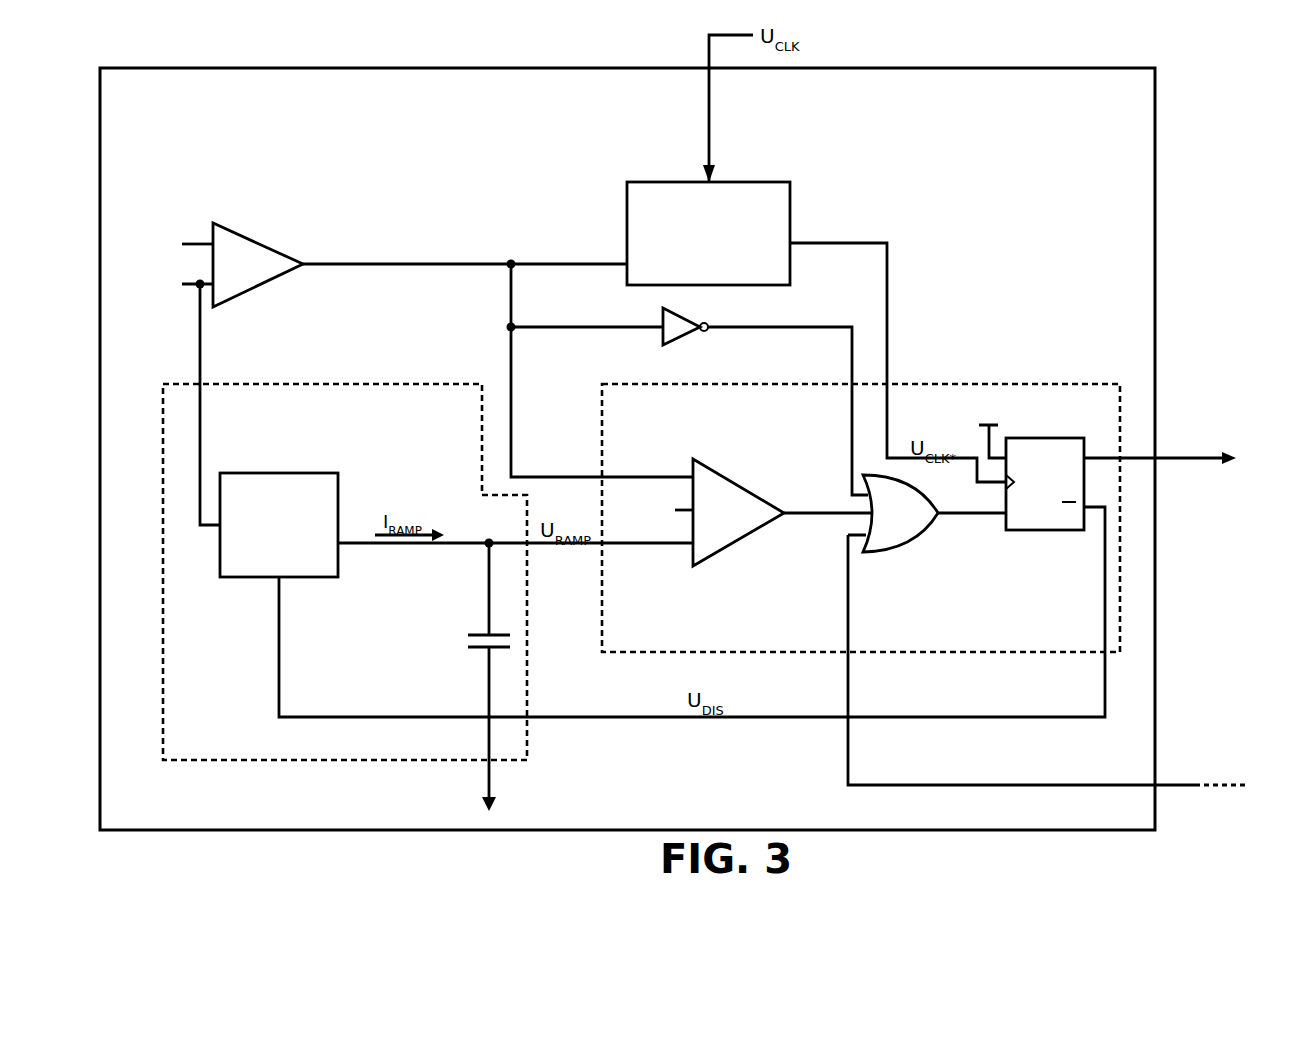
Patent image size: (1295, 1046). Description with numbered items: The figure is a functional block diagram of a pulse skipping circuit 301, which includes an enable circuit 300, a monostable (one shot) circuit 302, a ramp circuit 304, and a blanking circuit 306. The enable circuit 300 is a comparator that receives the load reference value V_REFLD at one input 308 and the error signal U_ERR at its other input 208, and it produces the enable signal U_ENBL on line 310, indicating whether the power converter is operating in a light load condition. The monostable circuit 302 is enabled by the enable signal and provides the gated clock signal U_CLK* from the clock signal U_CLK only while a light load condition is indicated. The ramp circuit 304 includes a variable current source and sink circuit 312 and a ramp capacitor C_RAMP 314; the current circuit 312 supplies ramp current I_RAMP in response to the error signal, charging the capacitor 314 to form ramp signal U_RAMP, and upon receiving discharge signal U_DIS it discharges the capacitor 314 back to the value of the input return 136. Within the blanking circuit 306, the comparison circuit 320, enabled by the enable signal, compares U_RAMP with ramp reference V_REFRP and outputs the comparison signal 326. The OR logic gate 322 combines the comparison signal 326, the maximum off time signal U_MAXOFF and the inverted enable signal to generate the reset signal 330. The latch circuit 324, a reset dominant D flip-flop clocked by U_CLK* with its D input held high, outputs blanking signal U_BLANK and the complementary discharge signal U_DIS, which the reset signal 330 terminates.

The input return 136 is at (500, 812).
The error signal U_ERR input 208 is at (196, 292).
The enable circuit 300 is at (254, 234).
The pulse skipping circuit 301 is at (627, 449).
The monostable (one shot) circuit 302 is at (793, 194).
The ramp circuit 304 is at (422, 381).
The blanking circuit 306 is at (1043, 384).
The reference voltage V_REFLD input 308 is at (196, 232).
The enable signal U_ENBL 310 is at (418, 257).
The variable current source and sink circuit 312 is at (344, 496).
The ramp capacitor 314 is at (468, 640).
The comparison circuit 320 is at (738, 477).
The logic gate 322 is at (905, 548).
The latch circuit 324 is at (1047, 406).
The comparison signal 326 is at (793, 505).
The reset signal 330 is at (978, 520).